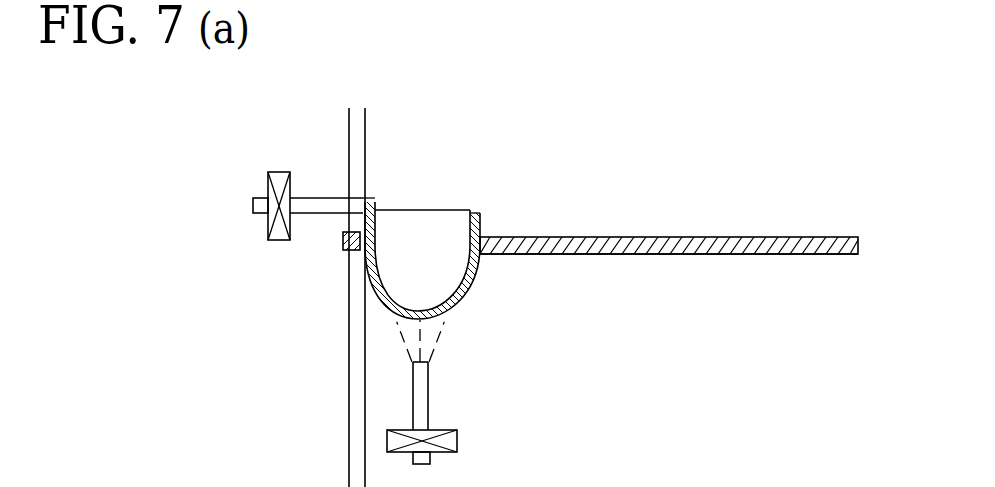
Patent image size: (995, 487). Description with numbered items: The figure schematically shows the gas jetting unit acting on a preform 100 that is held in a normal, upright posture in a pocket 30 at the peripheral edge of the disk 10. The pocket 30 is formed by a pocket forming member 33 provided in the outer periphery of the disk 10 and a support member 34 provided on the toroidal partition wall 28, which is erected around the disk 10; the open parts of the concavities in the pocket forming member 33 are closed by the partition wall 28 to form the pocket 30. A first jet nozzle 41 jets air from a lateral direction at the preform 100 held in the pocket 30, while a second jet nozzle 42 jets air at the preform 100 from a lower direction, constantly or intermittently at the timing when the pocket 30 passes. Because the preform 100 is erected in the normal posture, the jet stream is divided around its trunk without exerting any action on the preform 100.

The disk 10 is at (549, 260).
The partition wall 28 is at (346, 133).
The pocket 30 is at (480, 205).
The pocket forming member 33 is at (508, 237).
The support member 34 is at (352, 253).
The first jet nozzle 41 is at (285, 242).
The second jet nozzle 42 is at (458, 440).
The preform 100 is at (373, 210).